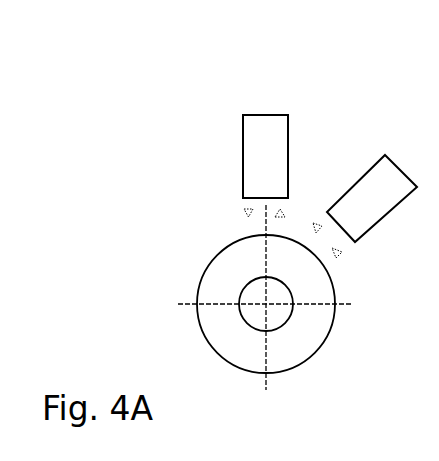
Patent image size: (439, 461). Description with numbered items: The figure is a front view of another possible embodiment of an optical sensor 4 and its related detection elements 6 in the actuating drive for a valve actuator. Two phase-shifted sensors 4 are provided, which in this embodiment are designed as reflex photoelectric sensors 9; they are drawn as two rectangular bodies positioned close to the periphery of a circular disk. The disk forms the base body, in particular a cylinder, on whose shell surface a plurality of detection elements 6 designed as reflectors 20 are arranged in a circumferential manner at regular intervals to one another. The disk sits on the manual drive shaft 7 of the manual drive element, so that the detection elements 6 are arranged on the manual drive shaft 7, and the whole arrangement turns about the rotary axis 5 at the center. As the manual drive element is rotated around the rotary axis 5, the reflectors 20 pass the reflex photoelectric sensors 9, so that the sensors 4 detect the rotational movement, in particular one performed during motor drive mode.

The sensor 4 is at (228, 157).
The reflex photoelectric sensor 9 is at (263, 151).
The reflector 20 is at (266, 236).
The rotary axis 5 is at (174, 288).
The manual drive shaft 7 is at (266, 304).
The detection element 6 is at (203, 321).